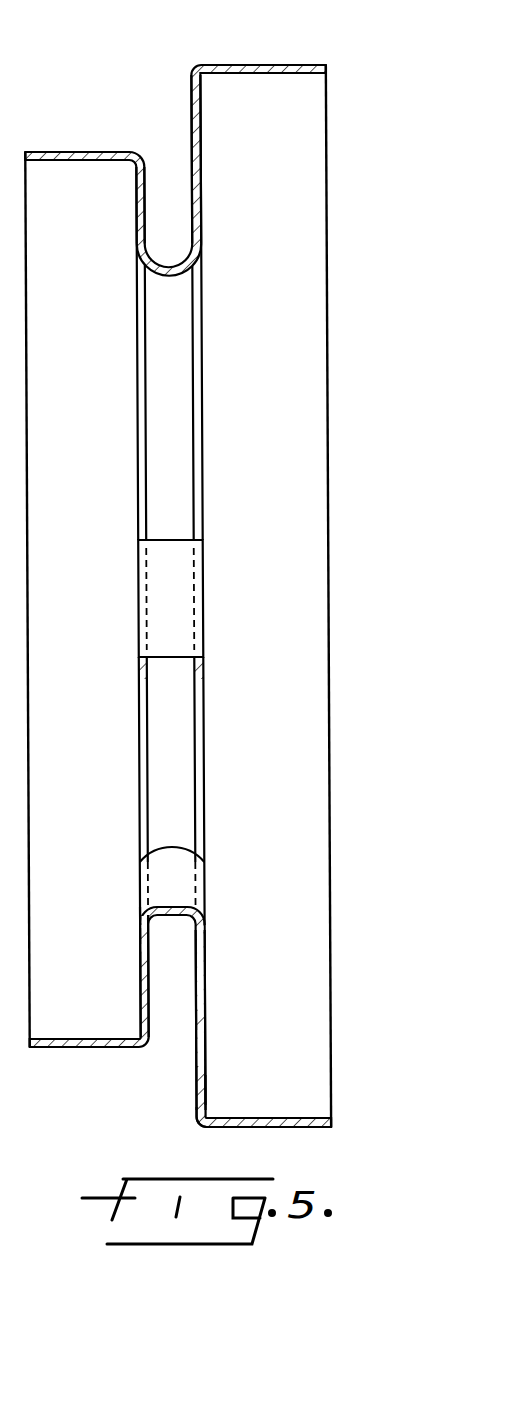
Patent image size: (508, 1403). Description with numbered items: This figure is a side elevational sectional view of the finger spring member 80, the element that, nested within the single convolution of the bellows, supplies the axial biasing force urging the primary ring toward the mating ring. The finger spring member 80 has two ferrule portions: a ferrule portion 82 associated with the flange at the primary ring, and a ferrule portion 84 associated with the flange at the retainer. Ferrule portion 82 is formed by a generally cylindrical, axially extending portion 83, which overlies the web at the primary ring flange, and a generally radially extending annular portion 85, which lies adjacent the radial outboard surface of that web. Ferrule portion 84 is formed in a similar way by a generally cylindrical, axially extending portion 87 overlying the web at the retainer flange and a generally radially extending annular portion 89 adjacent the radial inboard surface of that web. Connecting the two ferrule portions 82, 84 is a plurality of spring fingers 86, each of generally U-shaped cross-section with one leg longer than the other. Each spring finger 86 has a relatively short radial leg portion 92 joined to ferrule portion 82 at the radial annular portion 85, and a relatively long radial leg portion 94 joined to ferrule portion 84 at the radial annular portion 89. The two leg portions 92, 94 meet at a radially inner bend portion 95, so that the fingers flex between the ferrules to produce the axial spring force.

The finger spring member 80 is at (262, 52).
The ferrule portion 82 is at (150, 1045).
The generally cylindrical axially extending portion 83 is at (82, 1048).
The ferrule portion 84 is at (196, 1122).
The generally radially extending annular portion 85 is at (142, 997).
The spring fingers 86 is at (182, 284).
The generally cylindrical axially extending portion 87 is at (272, 1130).
The generally radially extending annular portion 89 is at (208, 1092).
The short radial leg portion 92 is at (143, 173).
The long radial leg portion 94 is at (188, 116).
The radially inner bend portion 95 is at (163, 277).